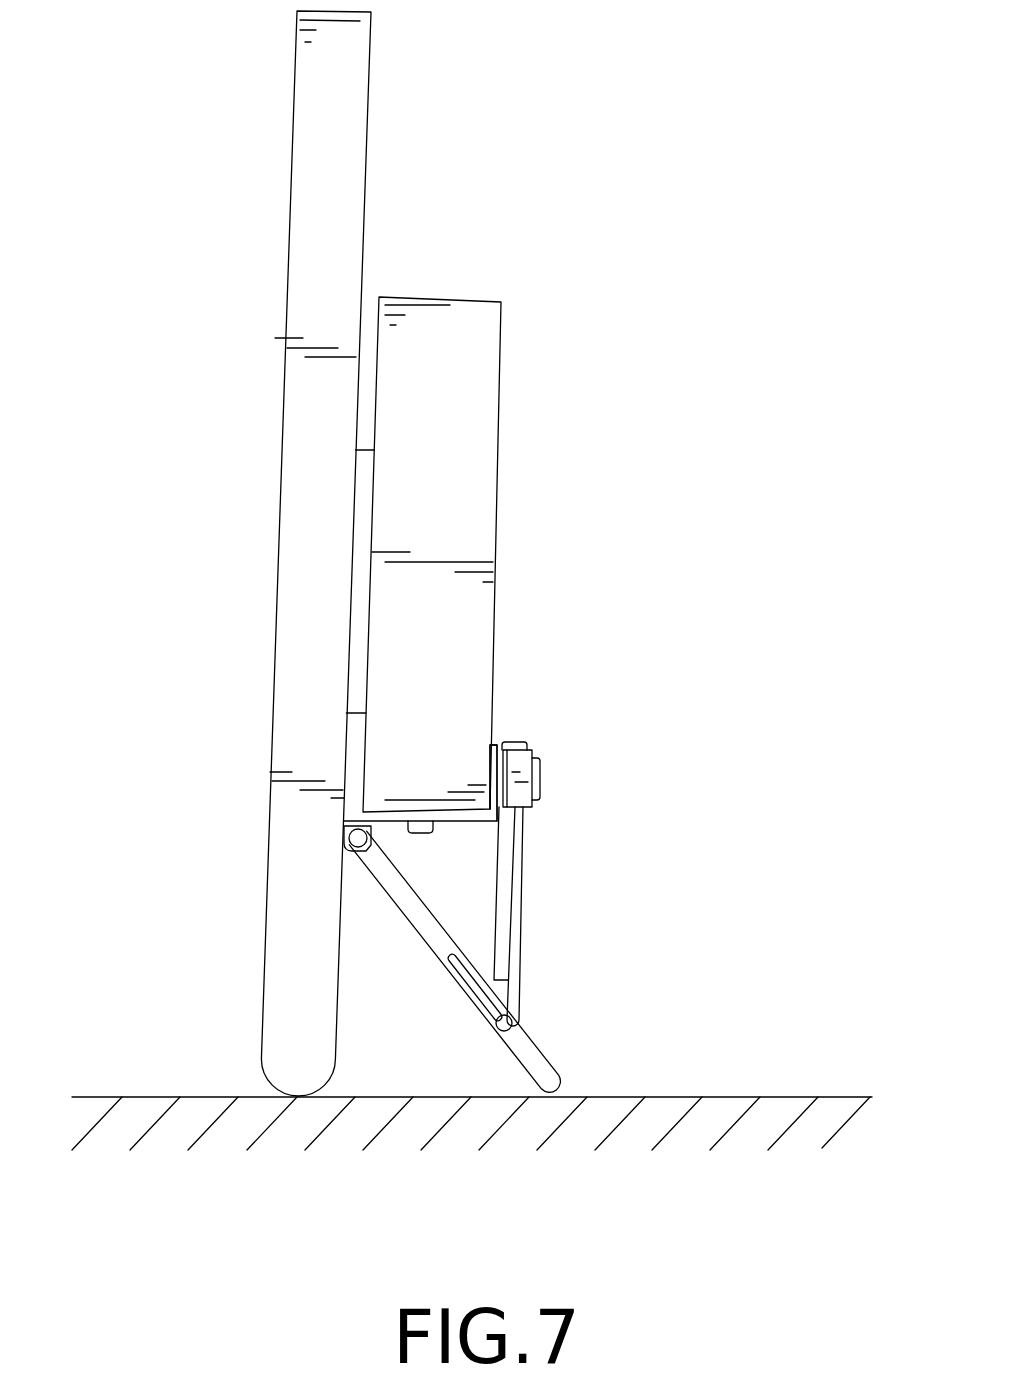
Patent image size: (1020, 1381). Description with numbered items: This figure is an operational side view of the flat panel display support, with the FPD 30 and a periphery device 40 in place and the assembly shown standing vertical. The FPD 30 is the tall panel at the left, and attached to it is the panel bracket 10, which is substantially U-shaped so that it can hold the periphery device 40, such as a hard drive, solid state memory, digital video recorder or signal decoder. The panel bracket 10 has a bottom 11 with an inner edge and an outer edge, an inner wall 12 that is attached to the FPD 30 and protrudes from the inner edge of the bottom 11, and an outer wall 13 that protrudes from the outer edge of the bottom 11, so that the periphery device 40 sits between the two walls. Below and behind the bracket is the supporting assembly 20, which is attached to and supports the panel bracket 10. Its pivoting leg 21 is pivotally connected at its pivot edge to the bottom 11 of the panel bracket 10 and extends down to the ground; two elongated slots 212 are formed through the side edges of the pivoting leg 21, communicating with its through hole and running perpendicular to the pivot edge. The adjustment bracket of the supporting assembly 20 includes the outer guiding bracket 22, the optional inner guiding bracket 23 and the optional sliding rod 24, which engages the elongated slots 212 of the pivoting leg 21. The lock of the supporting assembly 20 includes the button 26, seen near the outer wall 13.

The panel bracket 10 is at (322, 754).
The bottom 11 is at (481, 823).
The inner wall 12 is at (360, 623).
The outer wall 13 is at (495, 765).
The supporting assembly 20 is at (612, 928).
The pivoting leg 21 is at (428, 930).
The elongated slot 212 is at (476, 983).
The outer guiding bracket 22 is at (523, 878).
The inner guiding bracket 23 is at (503, 903).
The sliding rod 24 is at (513, 1022).
The button 26 is at (553, 772).
The flat panel display 30 is at (307, 242).
The periphery device 40 is at (478, 355).